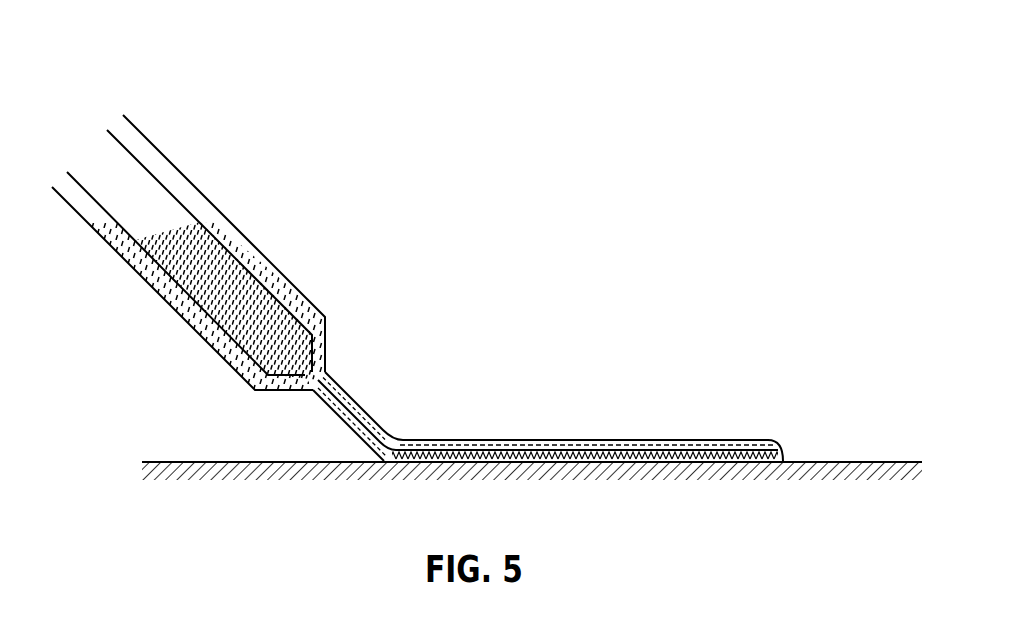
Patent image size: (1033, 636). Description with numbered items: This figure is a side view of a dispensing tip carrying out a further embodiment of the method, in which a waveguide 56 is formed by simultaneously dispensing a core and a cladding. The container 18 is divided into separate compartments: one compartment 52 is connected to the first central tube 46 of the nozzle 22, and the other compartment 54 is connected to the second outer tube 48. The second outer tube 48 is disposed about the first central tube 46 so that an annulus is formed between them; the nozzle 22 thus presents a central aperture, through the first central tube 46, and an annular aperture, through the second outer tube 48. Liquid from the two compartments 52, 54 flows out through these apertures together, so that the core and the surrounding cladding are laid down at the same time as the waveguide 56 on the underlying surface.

The container 18 is at (188, 200).
The nozzle 22 is at (548, 381).
The first central tube 46 is at (365, 407).
The second outer tube 48 is at (372, 423).
The compartment 52 is at (248, 288).
The compartment 54 is at (226, 224).
The waveguide 56 is at (692, 425).